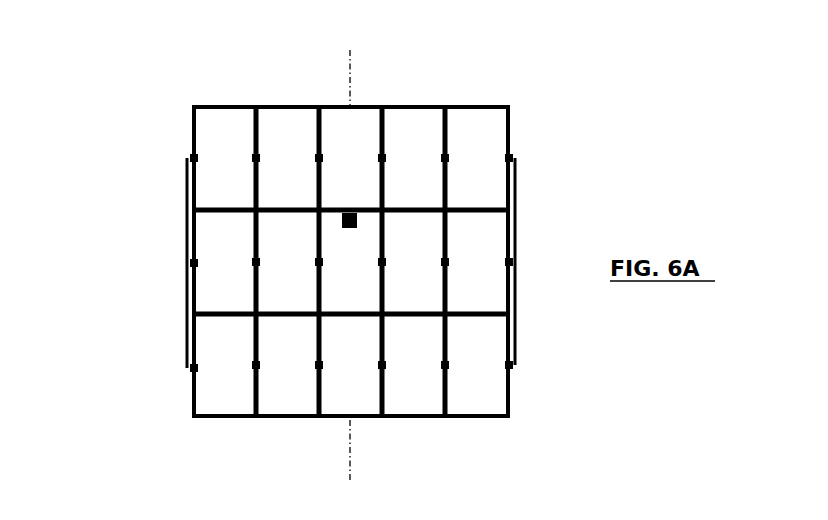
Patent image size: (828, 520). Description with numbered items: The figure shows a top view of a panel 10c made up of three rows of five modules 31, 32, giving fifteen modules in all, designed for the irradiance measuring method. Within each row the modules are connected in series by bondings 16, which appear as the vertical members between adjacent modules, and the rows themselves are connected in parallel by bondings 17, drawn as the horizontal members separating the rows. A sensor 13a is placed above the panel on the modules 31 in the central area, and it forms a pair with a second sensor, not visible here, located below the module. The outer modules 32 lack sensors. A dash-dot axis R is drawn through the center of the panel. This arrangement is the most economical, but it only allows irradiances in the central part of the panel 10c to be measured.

The panel 10c is at (312, 242).
The sensor 13a is at (358, 223).
The bondings 16 is at (258, 368).
The bondings 17 is at (190, 342).
The modules 31 is at (349, 262).
The modules 32 is at (231, 107).
The axis R is at (347, 68).